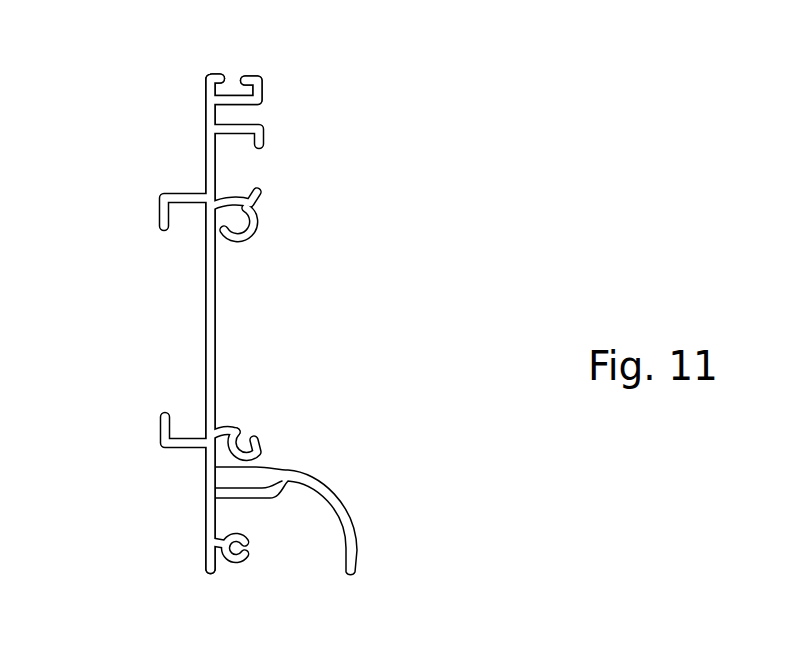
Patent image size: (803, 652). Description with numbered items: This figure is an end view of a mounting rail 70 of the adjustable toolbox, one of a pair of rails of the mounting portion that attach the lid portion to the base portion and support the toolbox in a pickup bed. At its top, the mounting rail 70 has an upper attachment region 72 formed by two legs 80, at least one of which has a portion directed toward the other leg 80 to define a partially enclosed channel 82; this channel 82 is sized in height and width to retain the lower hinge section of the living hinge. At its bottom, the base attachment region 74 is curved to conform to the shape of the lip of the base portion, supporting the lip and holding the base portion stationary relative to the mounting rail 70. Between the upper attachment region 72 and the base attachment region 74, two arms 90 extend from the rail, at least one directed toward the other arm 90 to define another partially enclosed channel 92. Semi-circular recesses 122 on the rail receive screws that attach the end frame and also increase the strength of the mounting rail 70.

The mounting rail 70 is at (366, 232).
The upper attachment region 72 is at (205, 163).
The base attachment region 74 is at (206, 530).
The legs 80 is at (210, 80).
The channel 82 is at (233, 78).
The arms 90 is at (158, 216).
The channel 92 is at (180, 359).
The semi-circular recesses 122 is at (243, 236).